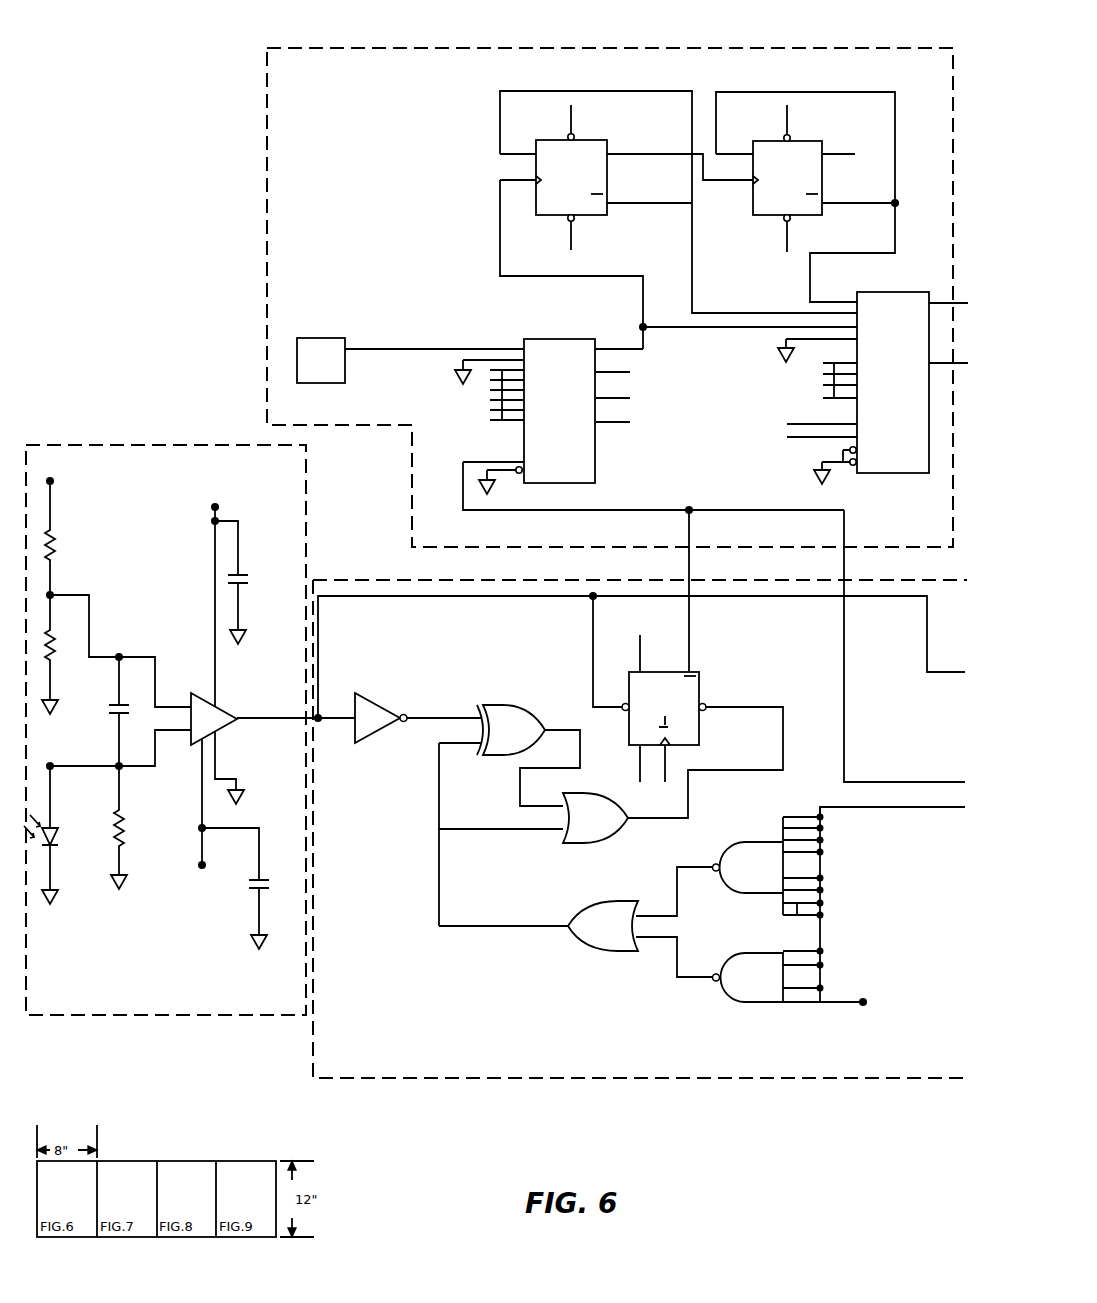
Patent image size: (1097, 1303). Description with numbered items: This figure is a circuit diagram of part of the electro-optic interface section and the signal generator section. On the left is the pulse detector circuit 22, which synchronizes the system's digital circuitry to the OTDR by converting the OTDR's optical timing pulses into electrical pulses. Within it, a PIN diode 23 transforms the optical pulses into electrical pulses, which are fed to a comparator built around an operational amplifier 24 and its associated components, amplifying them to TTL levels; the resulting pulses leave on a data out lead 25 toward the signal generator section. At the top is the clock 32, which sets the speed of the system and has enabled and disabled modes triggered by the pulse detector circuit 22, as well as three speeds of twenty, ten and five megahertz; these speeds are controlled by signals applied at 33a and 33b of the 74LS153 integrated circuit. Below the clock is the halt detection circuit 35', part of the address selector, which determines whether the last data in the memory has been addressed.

The clock 32 is at (512, 47).
The pulse detector circuit 22 is at (140, 445).
The operational amplifier 24 is at (197, 696).
The PIN diode 23 is at (43, 812).
The data out lead 25 is at (318, 725).
The clock speed control signal input 33a is at (808, 424).
The clock speed control signal input 33b is at (808, 437).
The halt detection circuit 35' is at (640, 794).